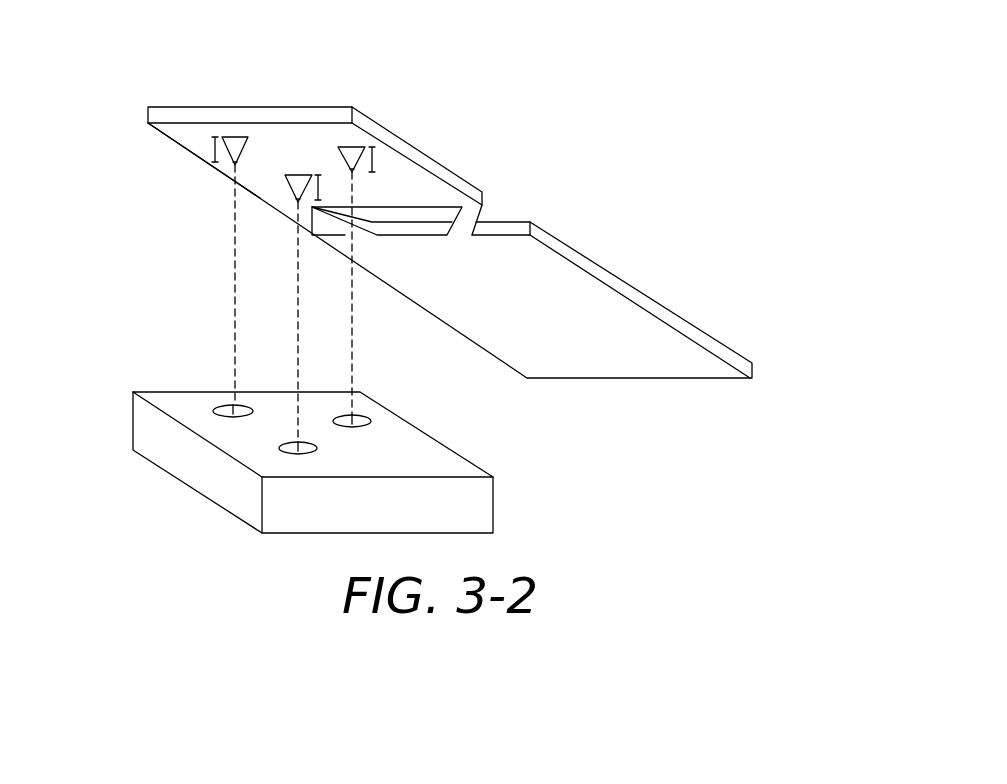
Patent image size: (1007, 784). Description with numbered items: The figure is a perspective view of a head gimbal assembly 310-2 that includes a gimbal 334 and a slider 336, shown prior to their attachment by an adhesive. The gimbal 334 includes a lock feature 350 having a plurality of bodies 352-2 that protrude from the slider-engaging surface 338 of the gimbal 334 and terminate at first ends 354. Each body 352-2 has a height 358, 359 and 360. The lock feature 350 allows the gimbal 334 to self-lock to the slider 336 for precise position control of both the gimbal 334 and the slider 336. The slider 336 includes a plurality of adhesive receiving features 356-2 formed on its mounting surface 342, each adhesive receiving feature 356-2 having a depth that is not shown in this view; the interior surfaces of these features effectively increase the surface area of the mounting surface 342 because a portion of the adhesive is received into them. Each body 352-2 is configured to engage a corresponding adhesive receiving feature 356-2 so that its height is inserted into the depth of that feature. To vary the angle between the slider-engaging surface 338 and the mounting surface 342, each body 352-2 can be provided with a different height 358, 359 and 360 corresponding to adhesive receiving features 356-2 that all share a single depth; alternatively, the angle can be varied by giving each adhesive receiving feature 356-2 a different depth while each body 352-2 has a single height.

The head gimbal assembly 310-2 is at (469, 98).
The gimbal 334 is at (425, 162).
The slider 336 is at (192, 462).
The slider-engaging surface 338 is at (178, 129).
The mounting surface 342 is at (185, 400).
The lock feature 350 is at (206, 195).
The bodies 352-2 is at (352, 147).
The first ends 354 is at (352, 172).
The adhesive receiving features 356-2 is at (253, 410).
The height 358 is at (214, 150).
The height 359 is at (321, 177).
The height 360 is at (373, 158).